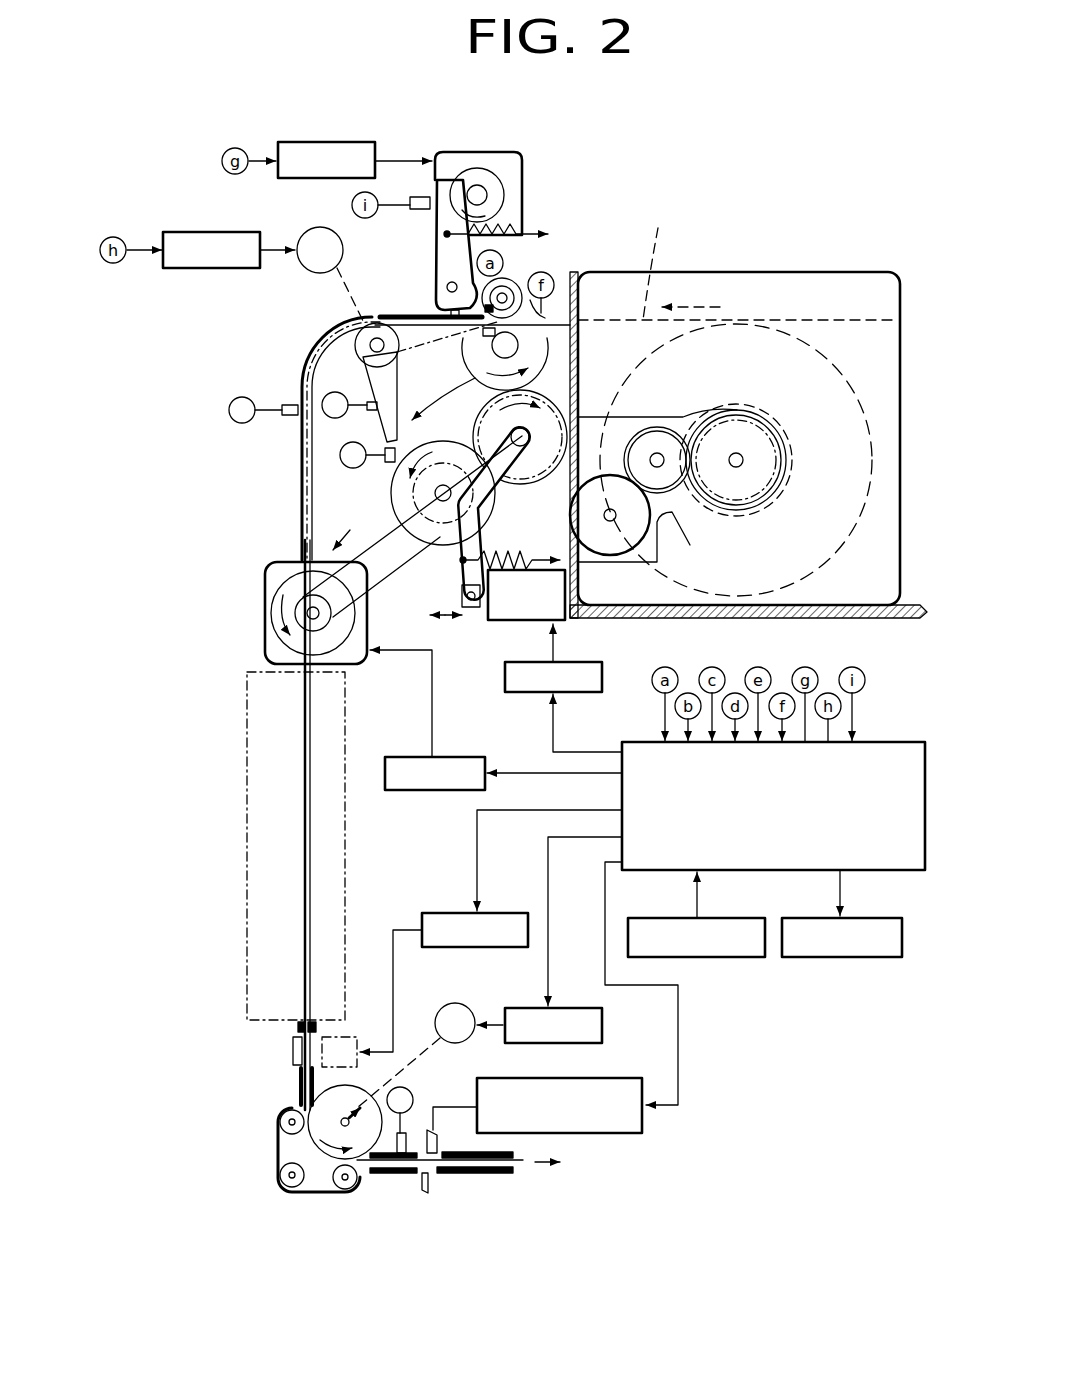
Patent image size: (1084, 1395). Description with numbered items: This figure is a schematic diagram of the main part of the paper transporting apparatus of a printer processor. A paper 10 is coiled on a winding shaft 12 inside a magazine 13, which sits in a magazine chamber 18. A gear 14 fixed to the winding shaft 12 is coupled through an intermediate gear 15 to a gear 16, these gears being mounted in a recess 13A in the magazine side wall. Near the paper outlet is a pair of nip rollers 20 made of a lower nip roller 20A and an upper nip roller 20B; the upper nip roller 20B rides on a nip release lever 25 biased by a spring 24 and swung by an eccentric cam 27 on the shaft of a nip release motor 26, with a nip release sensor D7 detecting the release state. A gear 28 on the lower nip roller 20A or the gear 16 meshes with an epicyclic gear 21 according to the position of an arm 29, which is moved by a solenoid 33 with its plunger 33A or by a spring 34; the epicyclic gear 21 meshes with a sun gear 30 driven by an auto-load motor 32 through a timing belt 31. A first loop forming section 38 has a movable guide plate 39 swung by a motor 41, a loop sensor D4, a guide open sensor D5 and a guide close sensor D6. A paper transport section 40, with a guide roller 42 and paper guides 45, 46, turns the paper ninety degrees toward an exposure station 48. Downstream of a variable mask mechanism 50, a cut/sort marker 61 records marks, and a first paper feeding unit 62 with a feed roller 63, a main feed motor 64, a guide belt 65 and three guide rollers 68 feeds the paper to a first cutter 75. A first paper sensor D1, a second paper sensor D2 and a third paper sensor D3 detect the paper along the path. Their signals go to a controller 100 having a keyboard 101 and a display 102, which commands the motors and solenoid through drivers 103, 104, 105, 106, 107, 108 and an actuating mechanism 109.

The paper 10 is at (659, 260).
The winding shaft 12 is at (790, 403).
The magazine 13 is at (762, 272).
The recess 13A is at (690, 545).
The gear 14 is at (770, 470).
The intermediate gear 15 is at (657, 437).
The gear 16 is at (614, 555).
The magazine chamber 18 is at (675, 610).
The nip rollers 20 is at (522, 262).
The lower nip roller 20A is at (490, 342).
The upper nip roller 20B is at (542, 268).
The epicyclic gear 21 is at (577, 402).
The spring 24 is at (522, 232).
The nip release lever 25 is at (443, 250).
The nip release motor 26 is at (456, 150).
The eccentric cam 27 is at (489, 178).
The gear 28 is at (443, 400).
The arm 29 is at (478, 440).
The sun gear 30 is at (392, 492).
The timing belt 31 is at (365, 533).
The auto-load motor 32 is at (265, 590).
The solenoid 33 is at (505, 612).
The plunger 33A is at (473, 618).
The spring 34 is at (520, 550).
The first loop forming section 38 is at (394, 303).
The movable guide plate 39 is at (398, 395).
The paper transport section 40 is at (306, 338).
The motor 41 is at (300, 268).
The guide roller 42 is at (348, 325).
The paper guide 45 is at (302, 362).
The paper guide 46 is at (315, 390).
The exposure station 48 is at (235, 762).
The variable mask mechanism 50 is at (243, 730).
The cut/sort marker 61 is at (348, 1033).
The first paper feeding unit 62 is at (264, 1154).
The feed roller 63 is at (350, 1090).
The main feed motor 64 is at (462, 1006).
The guide belt 65 is at (276, 1165).
The guide rollers 68 is at (280, 1112).
The first cutter 75 is at (438, 1140).
The controller 100 is at (882, 742).
The keyboard 101 is at (690, 958).
The display 102 is at (840, 958).
The driver 103 is at (325, 141).
The driver 104 is at (213, 270).
The driver 105 is at (572, 662).
The driver 106 is at (443, 792).
The driver 107 is at (447, 912).
The driver 108 is at (556, 1007).
The actuating mechanism 109 is at (613, 1077).
The first paper sensor D1 is at (447, 312).
The second paper sensor D2 is at (288, 404).
The third paper sensor D3 is at (406, 1132).
The loop sensor D4 is at (368, 412).
The guide open sensor D5 is at (386, 463).
The guide close sensor D6 is at (433, 313).
The nip release sensor D7 is at (405, 188).